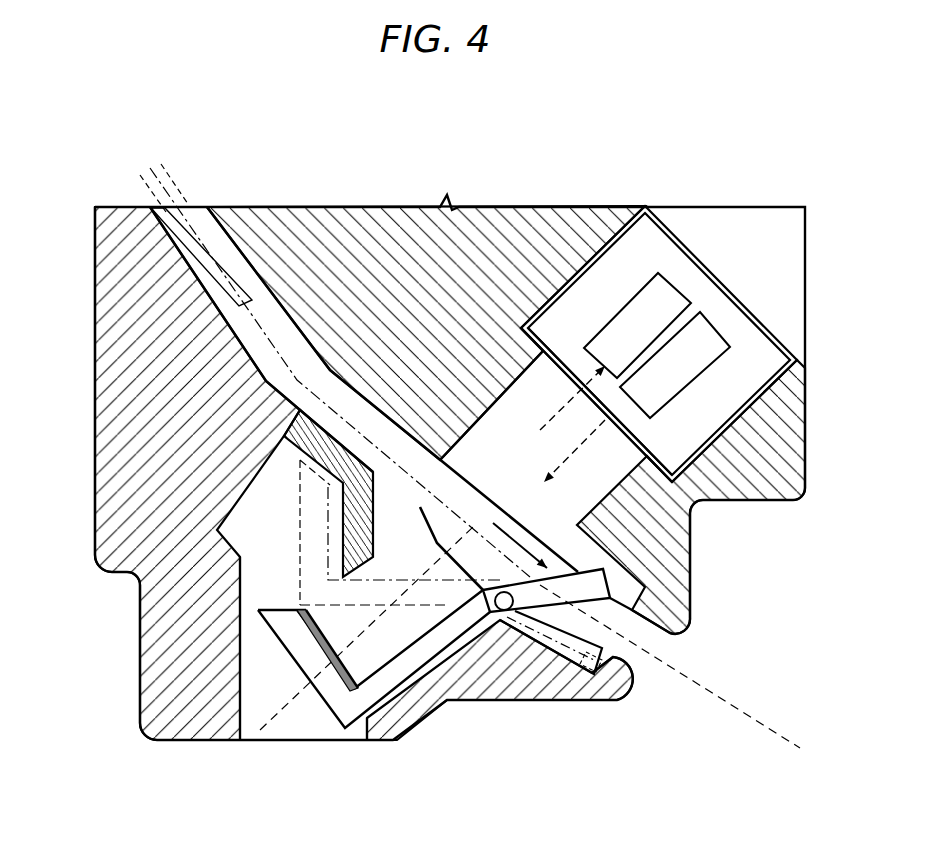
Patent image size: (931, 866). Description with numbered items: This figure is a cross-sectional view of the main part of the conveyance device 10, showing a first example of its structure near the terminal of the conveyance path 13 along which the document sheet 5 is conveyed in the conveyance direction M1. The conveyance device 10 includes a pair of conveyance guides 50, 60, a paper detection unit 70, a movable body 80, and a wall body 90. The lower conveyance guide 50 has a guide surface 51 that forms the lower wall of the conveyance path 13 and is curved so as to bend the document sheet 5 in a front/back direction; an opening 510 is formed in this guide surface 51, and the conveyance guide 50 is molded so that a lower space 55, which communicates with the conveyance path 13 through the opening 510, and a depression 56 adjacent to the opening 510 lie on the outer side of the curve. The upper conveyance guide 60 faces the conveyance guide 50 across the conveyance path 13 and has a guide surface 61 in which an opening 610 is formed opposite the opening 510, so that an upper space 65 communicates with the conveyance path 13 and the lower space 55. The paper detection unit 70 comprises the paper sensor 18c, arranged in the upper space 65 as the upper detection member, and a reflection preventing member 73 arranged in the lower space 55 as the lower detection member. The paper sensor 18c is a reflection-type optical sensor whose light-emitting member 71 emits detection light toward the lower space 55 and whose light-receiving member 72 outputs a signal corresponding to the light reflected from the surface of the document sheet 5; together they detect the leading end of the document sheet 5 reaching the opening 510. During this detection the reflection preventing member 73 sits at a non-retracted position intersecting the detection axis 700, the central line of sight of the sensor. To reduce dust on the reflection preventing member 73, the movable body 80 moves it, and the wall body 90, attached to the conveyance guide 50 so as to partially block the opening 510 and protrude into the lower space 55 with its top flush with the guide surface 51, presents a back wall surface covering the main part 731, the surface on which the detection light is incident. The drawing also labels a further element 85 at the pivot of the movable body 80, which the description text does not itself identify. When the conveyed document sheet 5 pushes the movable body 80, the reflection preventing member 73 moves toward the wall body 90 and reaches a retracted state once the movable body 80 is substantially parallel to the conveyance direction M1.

The conveyance device 10 is at (498, 91).
The document sheet 5 is at (198, 262).
The conveyance path 13 is at (247, 335).
The conveyance guide 50 is at (163, 620).
The guide surface 51 is at (262, 385).
The lower space 55 is at (267, 571).
The depression 56 is at (630, 698).
The conveyance guide 60 is at (475, 240).
The guide surface 61 is at (302, 363).
The upper space 65 is at (511, 423).
The paper detection unit 70 is at (578, 810).
The light-emitting member 71 is at (655, 402).
The light-receiving member 72 is at (612, 340).
The reflection preventing member 73 is at (400, 662).
The movable body 80 is at (357, 668).
The pivot shaft 85 is at (512, 613).
The wall body 90 is at (345, 515).
The opening 510 is at (420, 507).
The opening 610 is at (445, 465).
The detection axis 700 is at (525, 479).
The main part 731 is at (313, 647).
The paper sensor 18c is at (638, 442).
The conveyance direction M1 is at (517, 538).